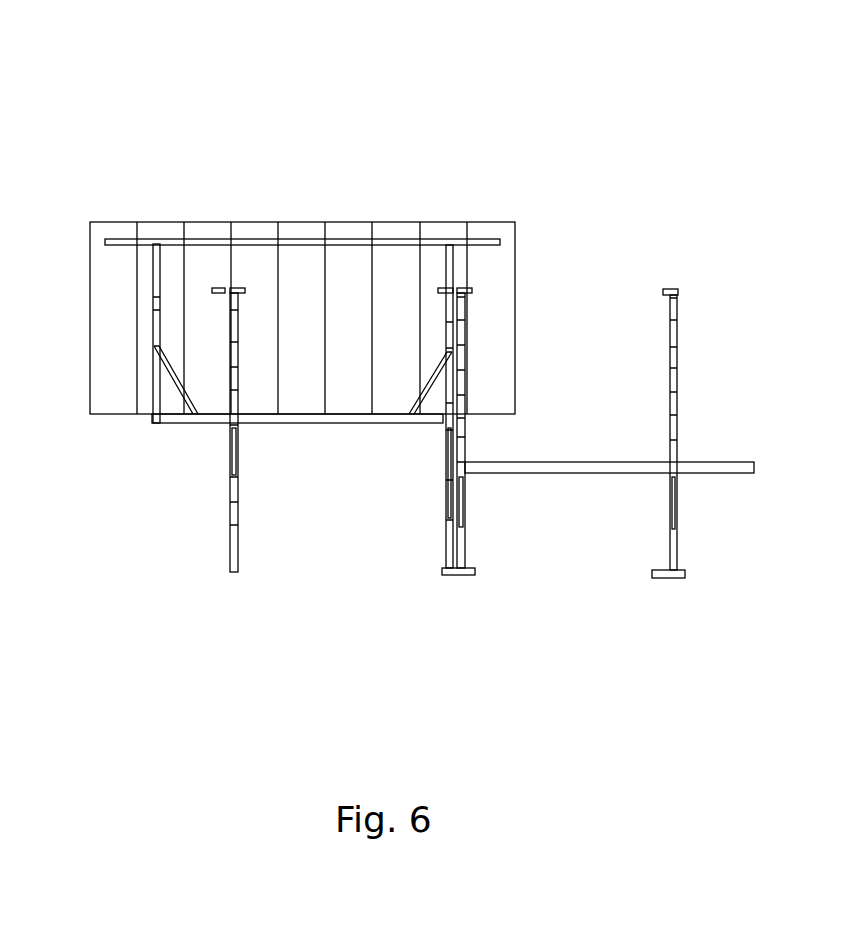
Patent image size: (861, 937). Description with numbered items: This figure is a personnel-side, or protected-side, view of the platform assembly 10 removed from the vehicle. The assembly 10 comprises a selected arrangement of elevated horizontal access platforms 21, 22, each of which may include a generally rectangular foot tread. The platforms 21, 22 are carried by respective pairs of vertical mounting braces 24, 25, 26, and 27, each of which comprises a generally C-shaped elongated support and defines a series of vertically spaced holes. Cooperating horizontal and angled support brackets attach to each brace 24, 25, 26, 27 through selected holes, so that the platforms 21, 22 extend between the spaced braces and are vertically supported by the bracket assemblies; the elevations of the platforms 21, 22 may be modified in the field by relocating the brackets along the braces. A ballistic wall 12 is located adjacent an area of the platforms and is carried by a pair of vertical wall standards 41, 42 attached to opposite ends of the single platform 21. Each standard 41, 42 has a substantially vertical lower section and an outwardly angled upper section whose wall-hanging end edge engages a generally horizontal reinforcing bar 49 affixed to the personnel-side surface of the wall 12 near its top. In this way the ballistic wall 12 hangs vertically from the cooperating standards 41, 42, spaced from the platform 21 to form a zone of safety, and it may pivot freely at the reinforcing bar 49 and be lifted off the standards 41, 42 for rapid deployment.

The platform assembly 10 is at (312, 150).
The ballistic wall 12 is at (493, 281).
The reinforcing bar 49 is at (490, 241).
The vertical wall standard 41 is at (152, 273).
The vertical wall standard 42 is at (444, 267).
The access platform 21 is at (355, 415).
The vertical mounting brace 24 is at (238, 552).
The vertical mounting brace 25 is at (443, 540).
The vertical mounting brace 26 is at (467, 546).
The access platform 22 is at (735, 466).
The vertical mounting brace 27 is at (677, 292).